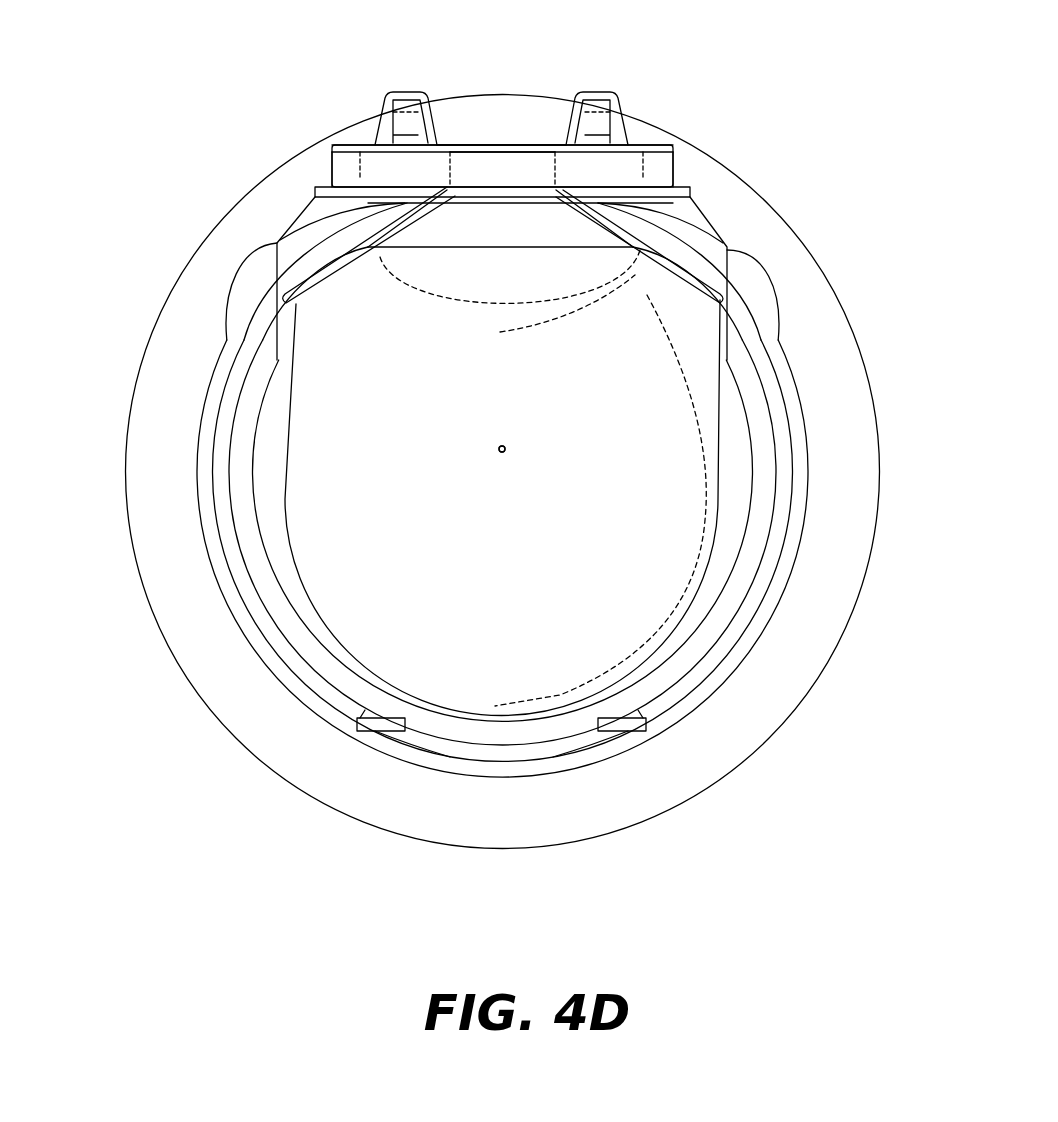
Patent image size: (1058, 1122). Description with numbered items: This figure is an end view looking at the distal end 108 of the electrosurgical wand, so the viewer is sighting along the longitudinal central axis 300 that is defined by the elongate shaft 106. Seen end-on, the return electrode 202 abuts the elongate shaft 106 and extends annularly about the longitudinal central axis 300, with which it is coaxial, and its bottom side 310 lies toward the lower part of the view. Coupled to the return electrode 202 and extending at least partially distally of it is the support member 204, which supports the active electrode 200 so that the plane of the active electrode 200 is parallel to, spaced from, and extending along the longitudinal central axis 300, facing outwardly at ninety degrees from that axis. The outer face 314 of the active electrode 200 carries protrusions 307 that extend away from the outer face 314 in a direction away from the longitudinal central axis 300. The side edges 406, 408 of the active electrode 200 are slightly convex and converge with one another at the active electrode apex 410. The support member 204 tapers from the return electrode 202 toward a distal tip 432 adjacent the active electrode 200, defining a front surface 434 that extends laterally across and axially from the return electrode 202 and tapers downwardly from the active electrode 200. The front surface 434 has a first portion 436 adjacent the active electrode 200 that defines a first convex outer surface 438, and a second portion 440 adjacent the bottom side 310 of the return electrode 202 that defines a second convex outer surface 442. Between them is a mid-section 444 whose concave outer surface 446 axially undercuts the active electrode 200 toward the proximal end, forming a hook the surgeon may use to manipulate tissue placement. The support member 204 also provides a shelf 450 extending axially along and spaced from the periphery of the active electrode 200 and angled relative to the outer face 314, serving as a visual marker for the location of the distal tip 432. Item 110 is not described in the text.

The elongate shaft 106 is at (750, 570).
The distal end 108 is at (546, 232).
The outer housing 110 is at (820, 680).
The active electrode 200 is at (362, 141).
The return electrode 202 is at (729, 490).
The support member 204 is at (514, 503).
The longitudinal central axis 300 is at (499, 449).
The protrusion 307 is at (405, 92).
The bottom side 310 is at (517, 705).
The outer face 314 is at (537, 133).
The side edge 406 is at (677, 163).
The side edge 408 is at (343, 160).
The active electrode apex 410 is at (490, 158).
The distal tip 432 is at (473, 223).
The front surface 434 is at (308, 556).
The first portion 436 is at (437, 271).
The first convex outer surface 438 is at (457, 293).
The second portion 440 is at (484, 694).
The second convex outer surface 442 is at (540, 683).
The mid-section 444 is at (515, 336).
The concave outer surface 446 is at (555, 310).
The shelf 450 is at (282, 240).